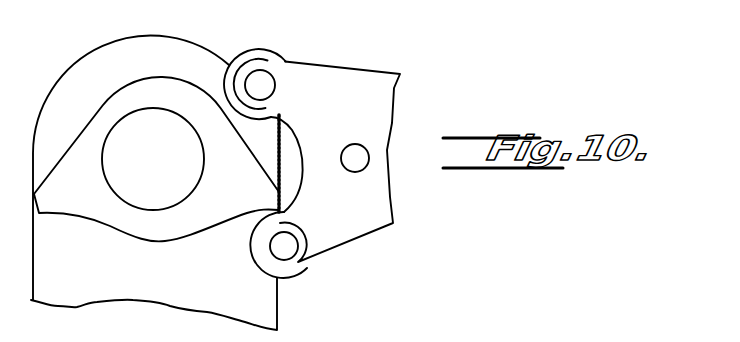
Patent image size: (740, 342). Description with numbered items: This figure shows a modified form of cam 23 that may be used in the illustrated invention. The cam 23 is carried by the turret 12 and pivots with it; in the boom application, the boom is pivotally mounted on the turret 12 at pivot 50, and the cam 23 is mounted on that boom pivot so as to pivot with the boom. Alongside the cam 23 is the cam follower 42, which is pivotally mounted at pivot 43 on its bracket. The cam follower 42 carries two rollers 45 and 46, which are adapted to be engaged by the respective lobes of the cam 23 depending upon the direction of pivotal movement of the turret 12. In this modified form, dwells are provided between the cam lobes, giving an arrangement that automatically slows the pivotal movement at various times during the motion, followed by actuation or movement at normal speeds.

The turret 12 is at (84, 262).
The cam 23 is at (64, 194).
The pivot 50 is at (150, 138).
The cam follower 42 is at (345, 209).
The pivot of cam follower 43 is at (349, 147).
The roller 45 is at (263, 51).
The roller 46 is at (305, 276).